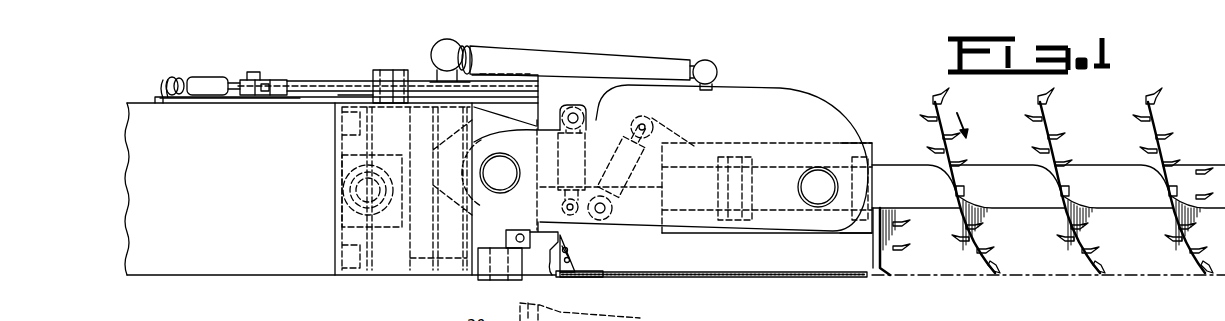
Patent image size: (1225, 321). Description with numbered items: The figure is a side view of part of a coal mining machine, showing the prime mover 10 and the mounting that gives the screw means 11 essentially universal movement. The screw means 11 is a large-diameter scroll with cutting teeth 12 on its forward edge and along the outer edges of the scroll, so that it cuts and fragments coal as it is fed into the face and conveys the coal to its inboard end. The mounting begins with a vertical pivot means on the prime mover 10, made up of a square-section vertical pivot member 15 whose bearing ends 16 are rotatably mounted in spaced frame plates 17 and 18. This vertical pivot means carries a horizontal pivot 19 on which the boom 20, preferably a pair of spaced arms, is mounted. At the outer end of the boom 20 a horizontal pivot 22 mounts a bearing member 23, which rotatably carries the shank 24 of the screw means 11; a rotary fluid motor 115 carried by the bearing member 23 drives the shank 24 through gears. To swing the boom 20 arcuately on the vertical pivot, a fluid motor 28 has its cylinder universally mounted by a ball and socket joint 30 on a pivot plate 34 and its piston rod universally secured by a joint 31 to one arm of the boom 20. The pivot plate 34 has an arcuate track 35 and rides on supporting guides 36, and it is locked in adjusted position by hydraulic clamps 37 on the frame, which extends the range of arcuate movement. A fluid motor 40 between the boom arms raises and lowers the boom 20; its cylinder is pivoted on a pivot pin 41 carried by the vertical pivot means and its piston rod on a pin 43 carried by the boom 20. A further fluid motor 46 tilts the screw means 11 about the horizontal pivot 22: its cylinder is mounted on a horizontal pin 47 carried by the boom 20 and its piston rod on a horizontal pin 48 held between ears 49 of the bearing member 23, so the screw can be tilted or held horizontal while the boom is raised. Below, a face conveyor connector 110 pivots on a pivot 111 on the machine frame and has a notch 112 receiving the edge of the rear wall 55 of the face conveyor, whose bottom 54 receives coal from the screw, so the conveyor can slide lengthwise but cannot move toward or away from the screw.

The prime mover 10 is at (133, 203).
The screw means 11 is at (1048, 146).
The cutting teeth 12 is at (1184, 172).
The vertical pivot member 15 is at (527, 117).
The bearing ends 16 is at (536, 100).
The plate 17 is at (510, 273).
The plate 18 is at (306, 100).
The horizontal pivot 19 is at (507, 177).
The boom 20 is at (768, 96).
The horizontal pivot 22 is at (821, 196).
The bearing member 23 is at (797, 141).
The shank 24 is at (835, 158).
The fluid motor 28 is at (605, 56).
The ball and socket joint 30 is at (432, 53).
The joint 31 is at (716, 70).
The pivot plate 34 is at (326, 85).
The arcuate track 35 is at (349, 88).
The guides 36 is at (381, 70).
The hydraulic clamps 37 is at (285, 80).
The fluid motor 40 is at (576, 153).
The pivot pin 41 is at (576, 214).
The pin 43 is at (580, 116).
The fluid motor 46 is at (618, 182).
The horizontal pin 47 is at (606, 216).
The horizontal pin 48 is at (650, 122).
The ears 49 is at (680, 128).
The bottom 54 is at (714, 278).
The rear wall 55 is at (604, 277).
The face conveyor connector 110 is at (546, 250).
The pivot 111 is at (514, 238).
The notch 112 is at (576, 243).
The rotary fluid motor 115 is at (690, 233).